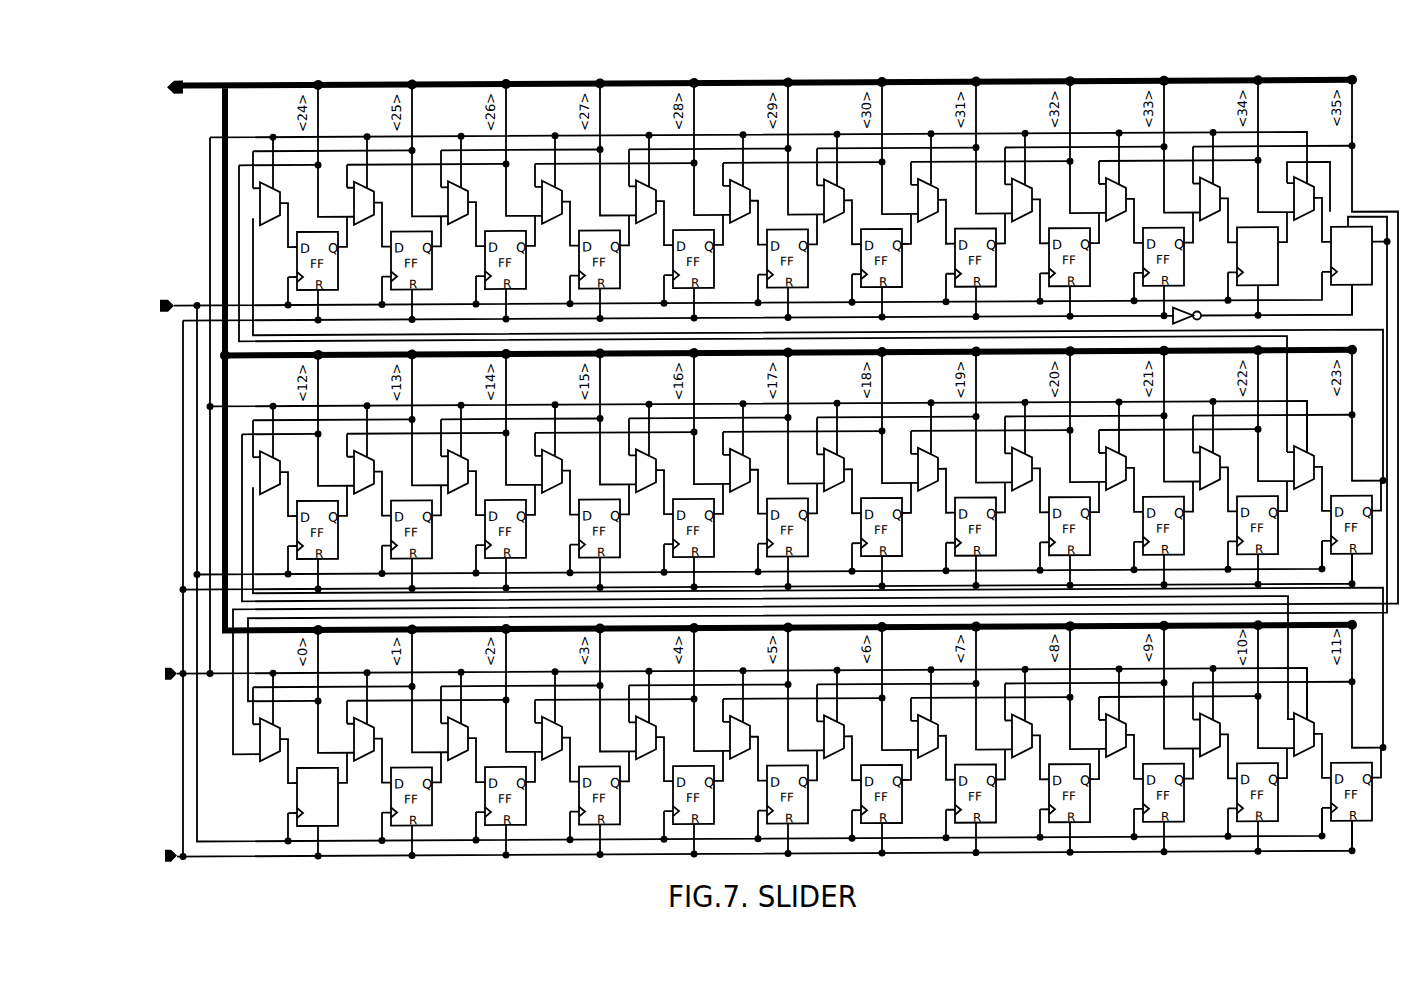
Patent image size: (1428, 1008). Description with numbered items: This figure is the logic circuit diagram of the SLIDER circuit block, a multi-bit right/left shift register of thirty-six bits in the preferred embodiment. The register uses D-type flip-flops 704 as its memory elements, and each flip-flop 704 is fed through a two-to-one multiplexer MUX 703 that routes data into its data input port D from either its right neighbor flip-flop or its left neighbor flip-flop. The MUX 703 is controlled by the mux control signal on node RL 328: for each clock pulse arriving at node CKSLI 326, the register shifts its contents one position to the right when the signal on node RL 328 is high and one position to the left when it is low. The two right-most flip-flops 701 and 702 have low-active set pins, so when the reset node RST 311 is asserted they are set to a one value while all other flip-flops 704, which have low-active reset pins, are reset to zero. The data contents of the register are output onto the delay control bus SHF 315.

The delay control bus SHF[0:35] 315 is at (195, 92).
The node CKSLI 326 is at (188, 303).
The node RL 328 is at (177, 672).
The reset node RST 311 is at (177, 853).
The right-most flip-flop 701 is at (1280, 257).
The right-most flip-flop 702 is at (1348, 231).
The two-to-one multiplexer MUX 703 is at (262, 745).
The D-type flip-flop 704 is at (300, 807).